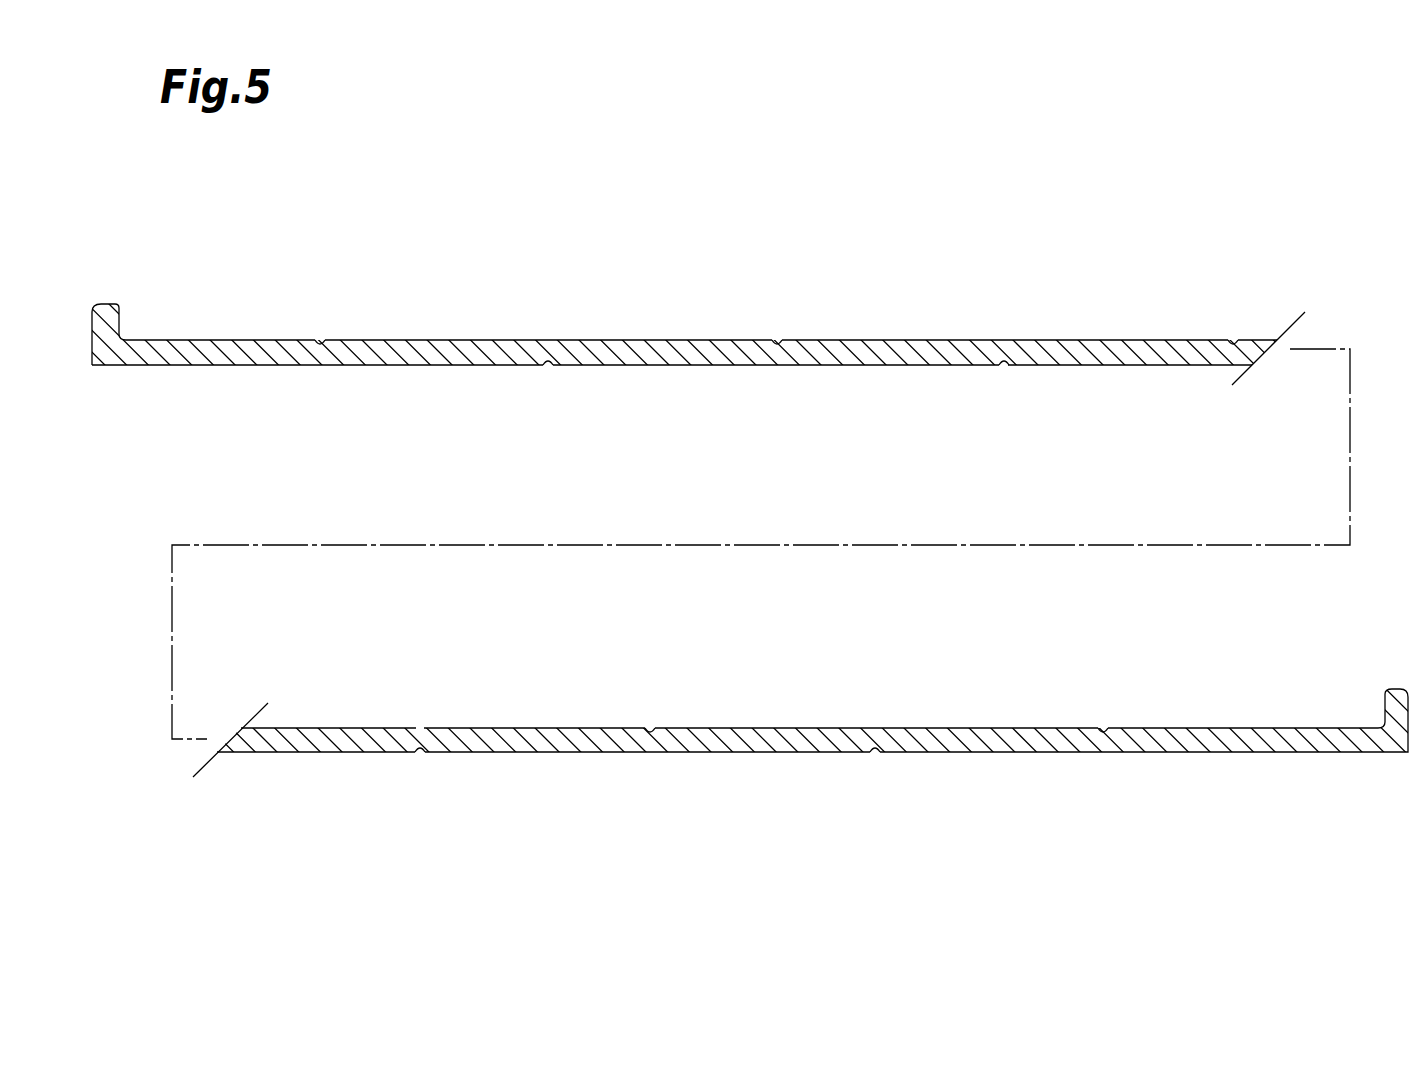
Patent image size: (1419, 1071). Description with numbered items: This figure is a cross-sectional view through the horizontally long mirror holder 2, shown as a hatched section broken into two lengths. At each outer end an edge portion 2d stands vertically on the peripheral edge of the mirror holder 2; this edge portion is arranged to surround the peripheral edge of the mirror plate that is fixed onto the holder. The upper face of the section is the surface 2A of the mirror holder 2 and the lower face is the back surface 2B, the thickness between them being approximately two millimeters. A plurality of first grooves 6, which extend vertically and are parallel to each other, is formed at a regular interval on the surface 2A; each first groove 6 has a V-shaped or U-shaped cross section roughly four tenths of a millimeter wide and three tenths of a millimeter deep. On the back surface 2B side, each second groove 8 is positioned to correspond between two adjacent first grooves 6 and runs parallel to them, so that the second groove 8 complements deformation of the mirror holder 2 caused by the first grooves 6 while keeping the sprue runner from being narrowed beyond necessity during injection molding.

The mirror holder 2 is at (729, 519).
The edge portion 2d is at (100, 331).
The surface 2A is at (178, 339).
The back surface 2B is at (177, 367).
The first groove 6 is at (320, 340).
The second groove 8 is at (548, 367).